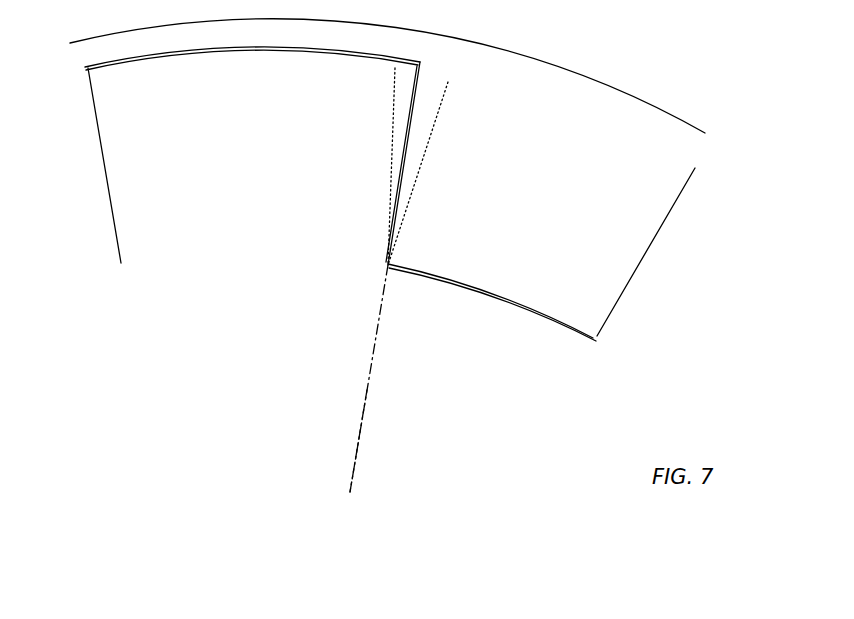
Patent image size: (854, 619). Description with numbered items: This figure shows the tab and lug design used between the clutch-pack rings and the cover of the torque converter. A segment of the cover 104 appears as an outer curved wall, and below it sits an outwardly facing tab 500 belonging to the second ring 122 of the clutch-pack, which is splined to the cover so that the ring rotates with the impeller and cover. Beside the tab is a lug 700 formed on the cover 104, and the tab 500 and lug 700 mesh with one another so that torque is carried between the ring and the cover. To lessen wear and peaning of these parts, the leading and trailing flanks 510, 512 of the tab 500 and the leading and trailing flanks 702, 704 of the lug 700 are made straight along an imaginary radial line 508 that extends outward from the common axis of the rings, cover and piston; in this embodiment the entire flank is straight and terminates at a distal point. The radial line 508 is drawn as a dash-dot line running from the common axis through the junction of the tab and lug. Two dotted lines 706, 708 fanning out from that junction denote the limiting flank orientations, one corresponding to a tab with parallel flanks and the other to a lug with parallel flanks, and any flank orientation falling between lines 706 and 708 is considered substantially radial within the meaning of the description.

The cover 104 is at (463, 71).
The tab 500 is at (272, 163).
The lug 700 is at (530, 223).
The second ring 122 is at (377, 319).
The imaginary radial line 508 is at (358, 432).
The leading flank 510 is at (403, 145).
The trailing flank 512 is at (115, 220).
The leading flank 702 is at (407, 193).
The trailing flank 704 is at (630, 272).
The line 706 is at (385, 127).
The line 708 is at (440, 107).